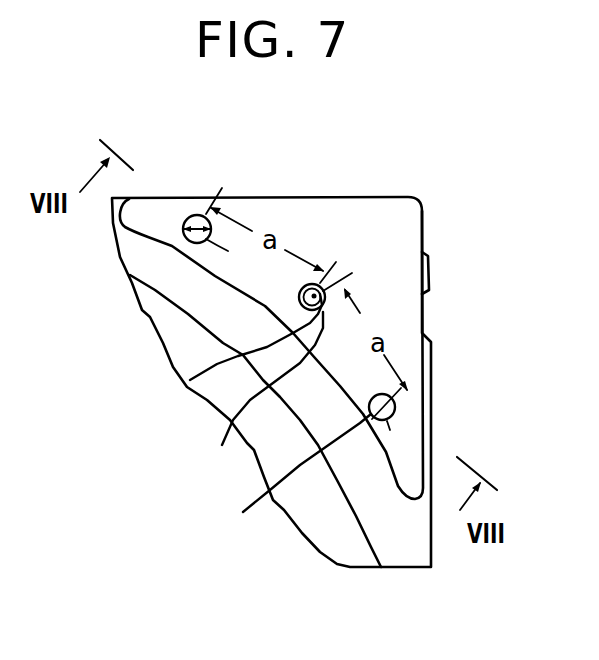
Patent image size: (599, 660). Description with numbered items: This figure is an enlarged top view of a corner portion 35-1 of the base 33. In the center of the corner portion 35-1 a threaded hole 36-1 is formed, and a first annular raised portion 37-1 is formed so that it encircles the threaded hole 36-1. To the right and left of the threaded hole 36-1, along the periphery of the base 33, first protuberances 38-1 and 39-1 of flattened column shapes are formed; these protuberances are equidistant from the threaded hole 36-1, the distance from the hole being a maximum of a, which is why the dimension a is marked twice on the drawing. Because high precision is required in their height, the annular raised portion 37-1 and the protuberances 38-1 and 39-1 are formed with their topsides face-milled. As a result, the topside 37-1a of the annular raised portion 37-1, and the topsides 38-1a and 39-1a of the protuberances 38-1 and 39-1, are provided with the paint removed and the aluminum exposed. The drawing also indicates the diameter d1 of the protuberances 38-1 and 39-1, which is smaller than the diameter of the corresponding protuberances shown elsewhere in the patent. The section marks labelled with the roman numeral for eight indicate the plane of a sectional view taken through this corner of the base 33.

The base 33 is at (368, 190).
The corner portion 35-1 is at (409, 231).
The threaded hole 36-1 is at (190, 380).
The first annular raised portion 37-1 is at (299, 297).
The topside of the annular raised portion 37-1a is at (241, 395).
The first protuberance 38-1 is at (395, 407).
The topside of the protuberance 38-1a is at (275, 477).
The first protuberance 39-1 is at (193, 213).
The topside of the protuberance 39-1a is at (182, 247).